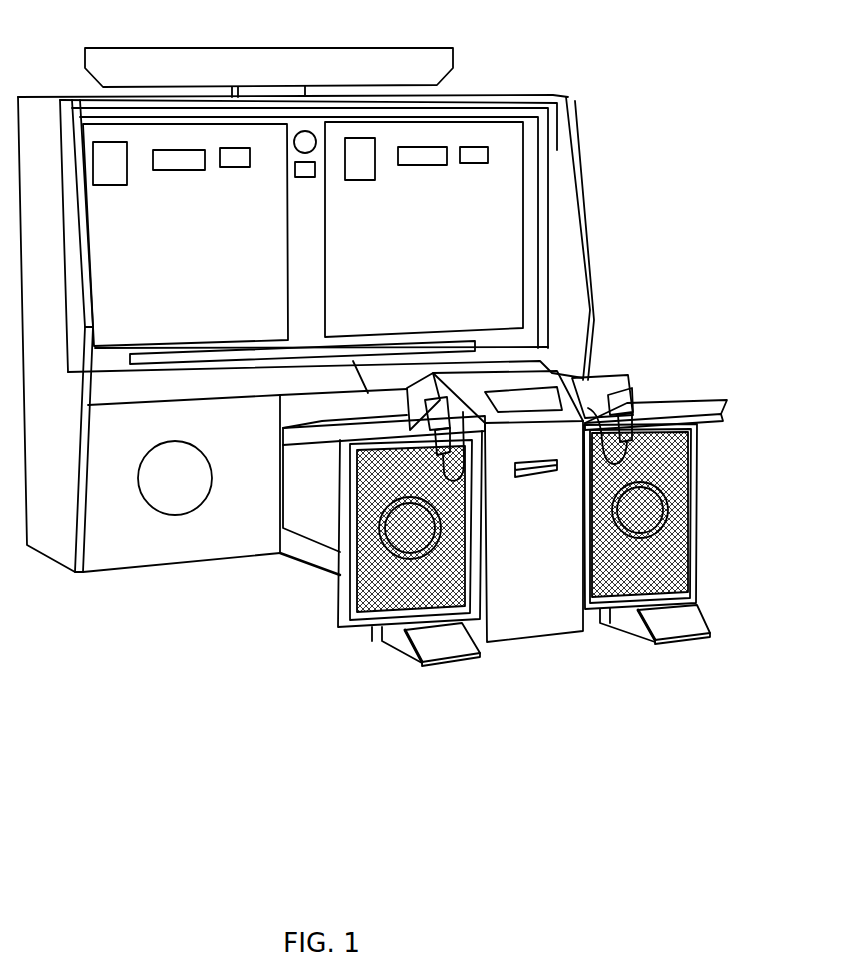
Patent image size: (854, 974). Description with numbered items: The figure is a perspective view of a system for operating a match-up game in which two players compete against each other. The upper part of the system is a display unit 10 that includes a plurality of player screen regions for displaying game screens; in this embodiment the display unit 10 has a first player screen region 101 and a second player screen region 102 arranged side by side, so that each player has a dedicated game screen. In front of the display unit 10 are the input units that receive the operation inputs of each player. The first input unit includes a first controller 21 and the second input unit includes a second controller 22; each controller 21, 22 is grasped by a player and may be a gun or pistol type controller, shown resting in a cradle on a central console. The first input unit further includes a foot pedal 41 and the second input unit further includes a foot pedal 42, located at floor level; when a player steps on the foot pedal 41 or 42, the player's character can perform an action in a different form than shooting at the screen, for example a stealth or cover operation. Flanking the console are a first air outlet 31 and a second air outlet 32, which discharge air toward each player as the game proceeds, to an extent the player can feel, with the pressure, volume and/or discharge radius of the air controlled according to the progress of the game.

The display unit 10 is at (552, 250).
The first player screen region 101 is at (187, 230).
The second player screen region 102 is at (433, 230).
The first controller 21 is at (442, 412).
The second controller 22 is at (630, 398).
The first air outlet 31 is at (373, 483).
The second air outlet 32 is at (672, 460).
The foot pedal 41 is at (438, 646).
The foot pedal 42 is at (673, 622).